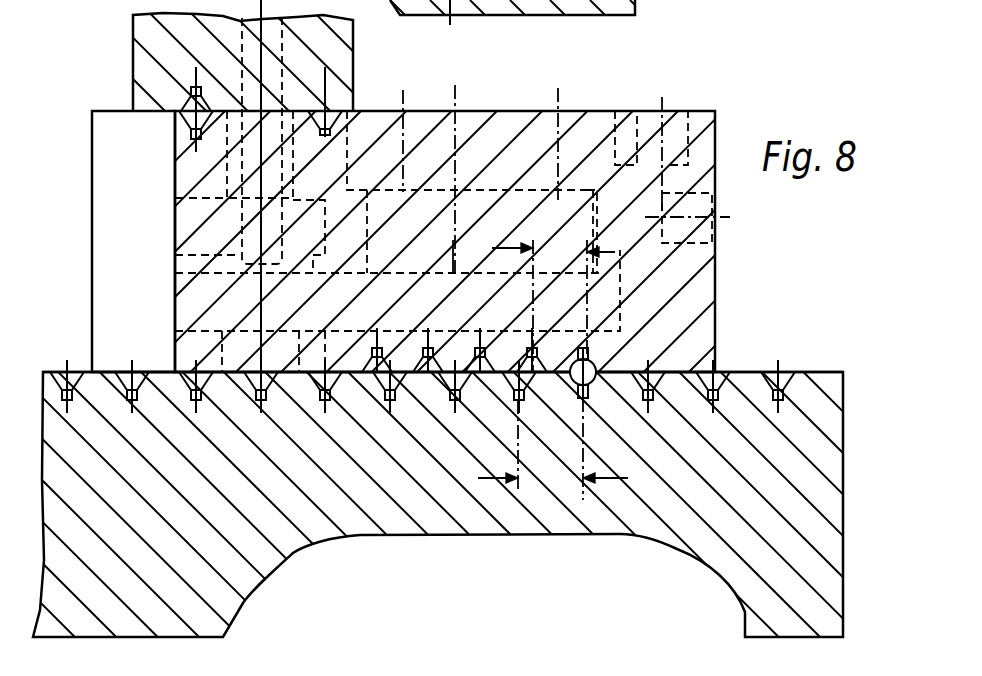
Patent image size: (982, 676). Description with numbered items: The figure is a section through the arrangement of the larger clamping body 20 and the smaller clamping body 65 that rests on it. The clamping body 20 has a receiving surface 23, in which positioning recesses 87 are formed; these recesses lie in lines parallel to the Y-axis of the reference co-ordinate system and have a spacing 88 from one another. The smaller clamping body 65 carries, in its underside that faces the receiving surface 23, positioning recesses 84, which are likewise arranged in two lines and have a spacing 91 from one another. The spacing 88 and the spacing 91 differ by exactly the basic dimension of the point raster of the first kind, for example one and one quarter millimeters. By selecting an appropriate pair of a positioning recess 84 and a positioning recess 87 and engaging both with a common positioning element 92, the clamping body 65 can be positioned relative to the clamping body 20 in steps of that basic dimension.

The clamping body 20 is at (815, 453).
The receiving surface 23 is at (750, 370).
The clamping body 65 is at (630, 182).
The positioning recess 84 is at (437, 380).
The positioning recess 87 is at (655, 378).
The spacing 88 is at (547, 478).
The spacing 91 is at (553, 243).
The positioning element 92 is at (602, 368).